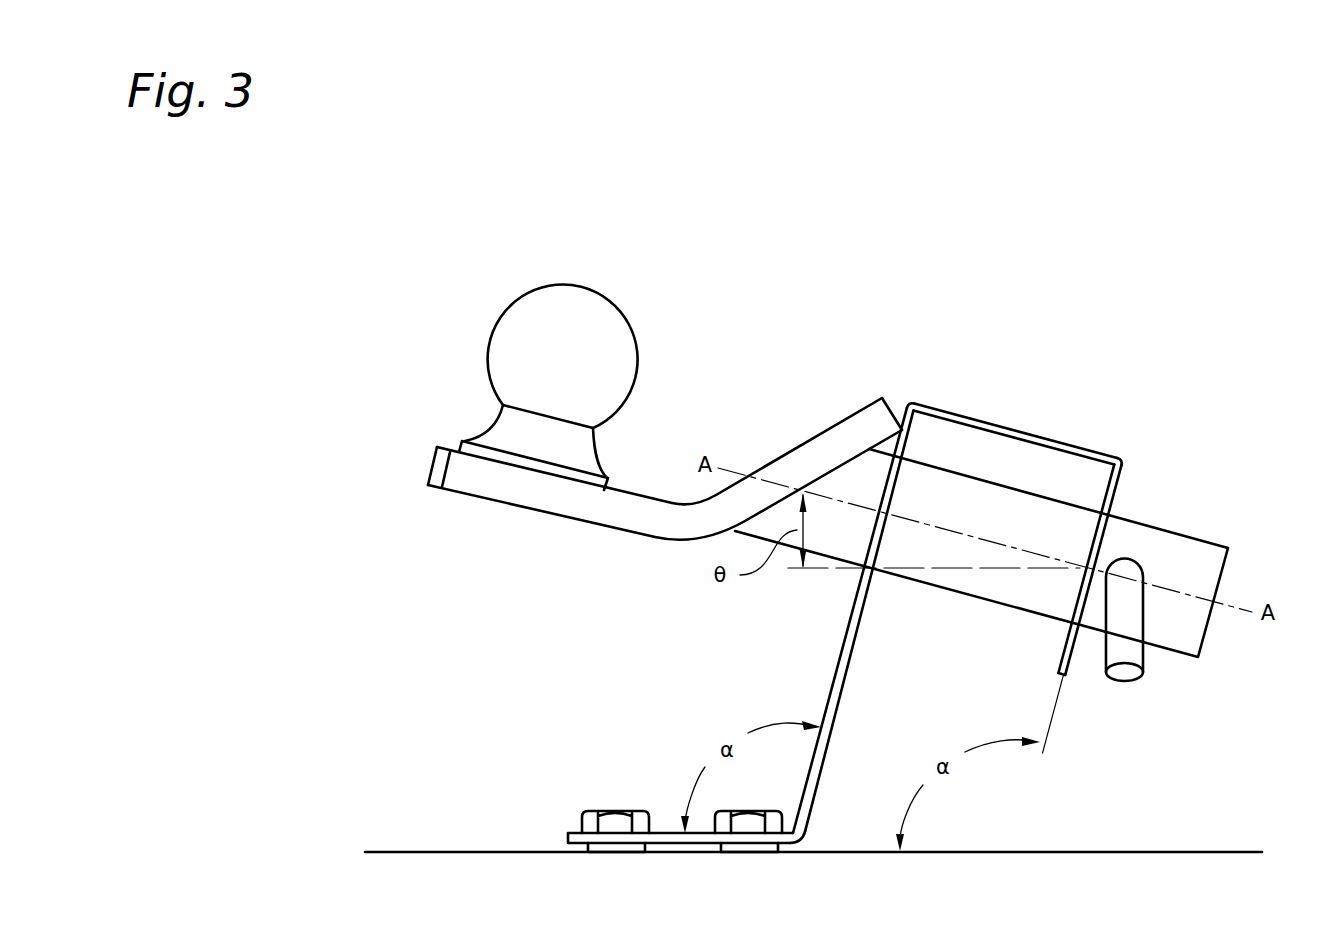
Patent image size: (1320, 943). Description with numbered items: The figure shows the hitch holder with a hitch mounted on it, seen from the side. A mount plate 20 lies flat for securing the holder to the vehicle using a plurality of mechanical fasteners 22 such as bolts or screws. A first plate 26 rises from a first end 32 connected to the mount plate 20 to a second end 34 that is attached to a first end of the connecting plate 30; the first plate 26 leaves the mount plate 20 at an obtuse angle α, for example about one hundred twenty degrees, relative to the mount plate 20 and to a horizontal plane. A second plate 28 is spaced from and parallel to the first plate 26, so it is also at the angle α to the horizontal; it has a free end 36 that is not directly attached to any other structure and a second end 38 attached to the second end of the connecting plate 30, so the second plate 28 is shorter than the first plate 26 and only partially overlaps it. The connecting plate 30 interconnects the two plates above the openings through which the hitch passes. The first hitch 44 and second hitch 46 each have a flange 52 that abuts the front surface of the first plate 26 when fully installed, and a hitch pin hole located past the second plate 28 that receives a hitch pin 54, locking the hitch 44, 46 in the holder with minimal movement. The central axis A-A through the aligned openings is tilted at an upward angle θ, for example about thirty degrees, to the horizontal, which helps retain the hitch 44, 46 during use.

The mount plate 20 is at (667, 832).
The mechanical fasteners 22 is at (615, 812).
The first plate 26 is at (834, 682).
The second plate 28 is at (1118, 503).
The connecting plate 30 is at (1022, 431).
The first end of first plate 32 is at (800, 846).
The second end of first plate 34 is at (908, 400).
The free end of second plate 36 is at (1067, 678).
The second end of second plate 38 is at (1126, 461).
The first hitch 44 is at (507, 307).
The second hitch 46 is at (665, 469).
The flange 52 is at (883, 397).
The hitch pin 54 is at (1140, 681).